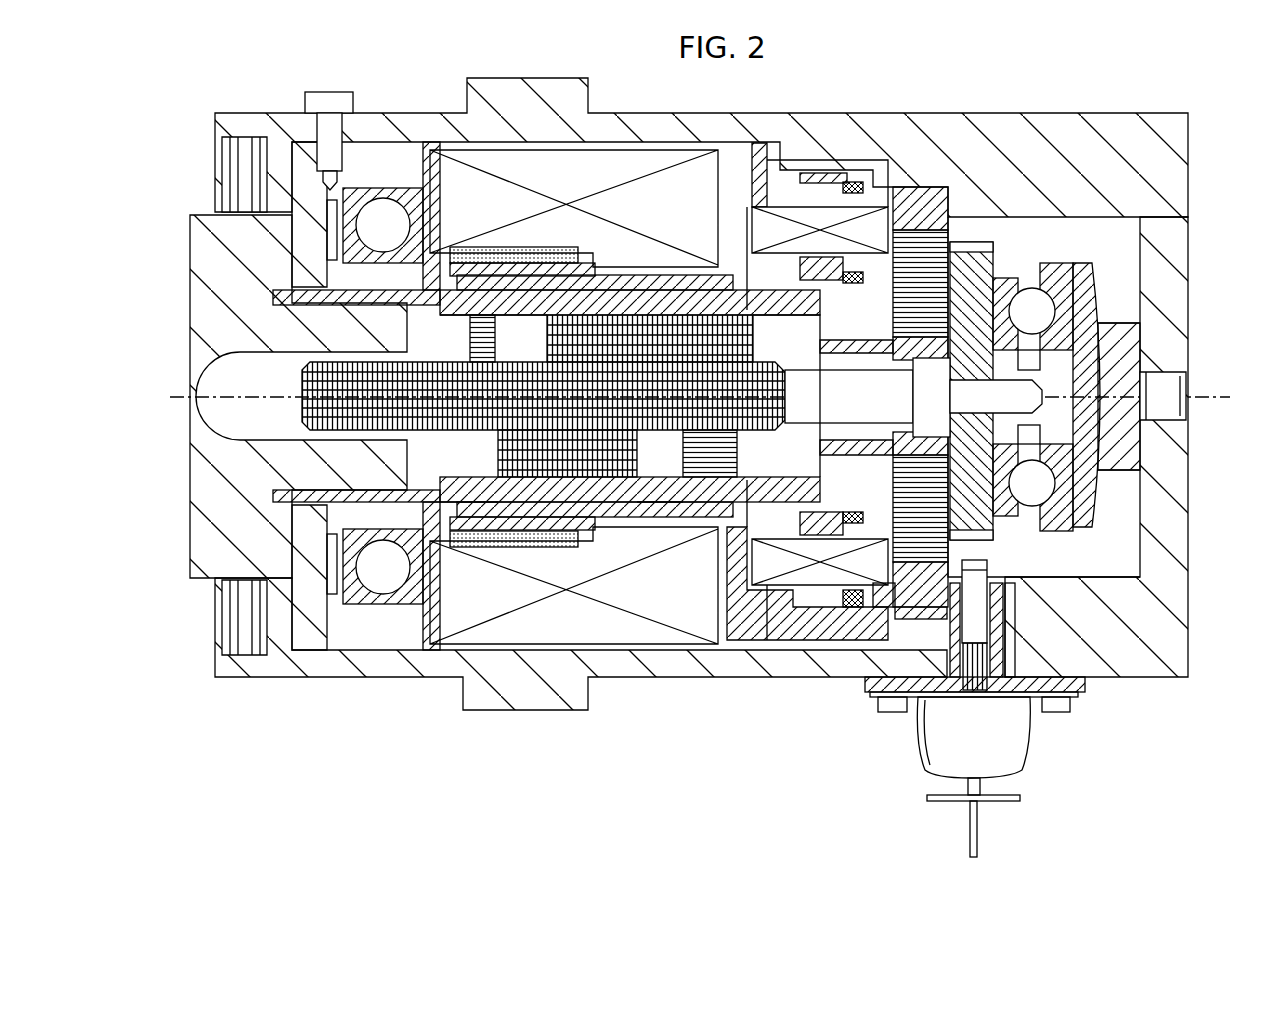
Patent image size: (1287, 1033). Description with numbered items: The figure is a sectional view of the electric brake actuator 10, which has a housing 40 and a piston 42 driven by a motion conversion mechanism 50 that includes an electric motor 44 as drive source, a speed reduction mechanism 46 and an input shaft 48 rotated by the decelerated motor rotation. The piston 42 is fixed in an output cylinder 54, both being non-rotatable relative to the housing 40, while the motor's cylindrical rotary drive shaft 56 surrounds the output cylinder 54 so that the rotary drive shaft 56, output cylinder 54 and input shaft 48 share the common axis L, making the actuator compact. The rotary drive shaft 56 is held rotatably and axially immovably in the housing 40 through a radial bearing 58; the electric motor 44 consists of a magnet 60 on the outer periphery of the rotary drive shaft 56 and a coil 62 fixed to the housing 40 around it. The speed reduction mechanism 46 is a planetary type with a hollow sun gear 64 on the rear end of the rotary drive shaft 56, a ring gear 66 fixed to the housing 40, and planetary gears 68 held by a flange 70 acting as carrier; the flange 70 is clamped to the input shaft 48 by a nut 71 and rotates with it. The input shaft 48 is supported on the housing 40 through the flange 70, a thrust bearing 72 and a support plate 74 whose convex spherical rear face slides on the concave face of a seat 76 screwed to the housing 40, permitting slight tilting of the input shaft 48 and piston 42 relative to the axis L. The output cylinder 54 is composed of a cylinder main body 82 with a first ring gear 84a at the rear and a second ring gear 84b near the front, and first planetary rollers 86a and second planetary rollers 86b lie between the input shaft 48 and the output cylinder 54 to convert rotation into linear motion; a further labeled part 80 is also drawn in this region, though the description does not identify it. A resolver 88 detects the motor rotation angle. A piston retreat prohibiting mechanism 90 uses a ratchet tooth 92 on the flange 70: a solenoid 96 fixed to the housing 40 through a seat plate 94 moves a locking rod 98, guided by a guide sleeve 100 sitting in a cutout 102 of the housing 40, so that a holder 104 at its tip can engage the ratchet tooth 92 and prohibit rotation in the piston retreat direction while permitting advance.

The electric brake actuator 10 is at (398, 824).
The housing 40 is at (662, 702).
The piston 42 is at (205, 360).
The electric motor 44 is at (522, 418).
The speed reduction mechanism 46 is at (961, 224).
The input shaft 48 is at (820, 222).
The motion conversion mechanism 50 is at (640, 360).
The output cylinder 54 is at (551, 522).
The rotary drive shaft 56 is at (695, 502).
The radial bearing 58 is at (366, 196).
The magnet 60 is at (500, 600).
The coil 62 is at (540, 630).
The sun gear 64 is at (878, 458).
The ring gear 66 is at (910, 620).
The planetary gears 68 is at (880, 608).
The flange 70 is at (1016, 300).
The nut 71 is at (1030, 452).
The thrust bearing 72 is at (1078, 283).
The support plate 74 is at (1100, 298).
The seat 76 is at (1132, 343).
The nut 80 is at (764, 300).
The cylinder main body 82 is at (432, 605).
The first ring gear 84a is at (706, 315).
The second ring gear 84b is at (477, 315).
The first planetary rollers 86a is at (655, 274).
The second planetary rollers 86b is at (600, 520).
The resolver 88 is at (897, 186).
The piston retreat prohibiting mechanism 90 is at (1012, 708).
The ratchet tooth 92 is at (1086, 683).
The seat plate 94 is at (1080, 695).
The solenoid 96 is at (1020, 796).
The locking rod 98 is at (1020, 748).
The guide sleeve 100 is at (924, 748).
The cutout 102 is at (975, 618).
The holder 104 is at (1012, 625).
The axis L is at (1200, 396).